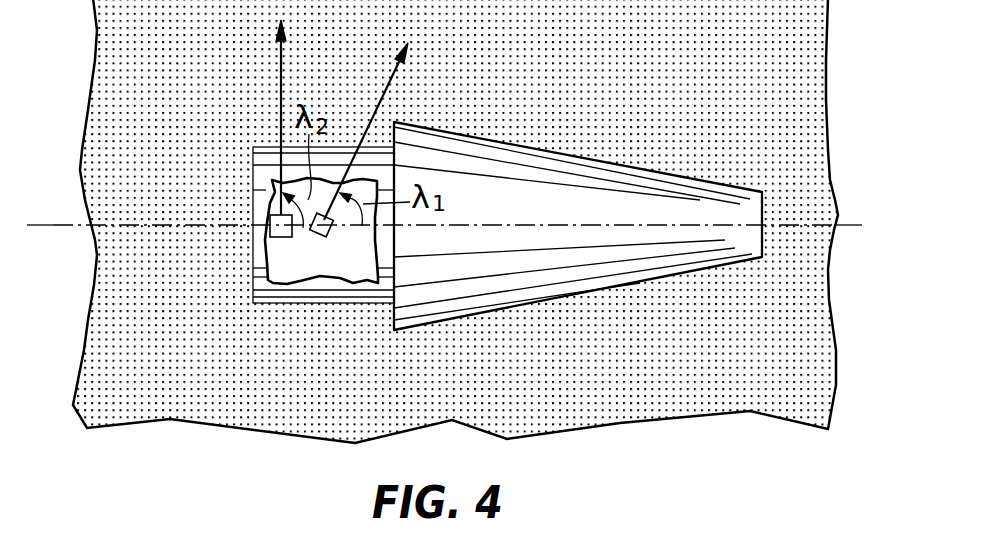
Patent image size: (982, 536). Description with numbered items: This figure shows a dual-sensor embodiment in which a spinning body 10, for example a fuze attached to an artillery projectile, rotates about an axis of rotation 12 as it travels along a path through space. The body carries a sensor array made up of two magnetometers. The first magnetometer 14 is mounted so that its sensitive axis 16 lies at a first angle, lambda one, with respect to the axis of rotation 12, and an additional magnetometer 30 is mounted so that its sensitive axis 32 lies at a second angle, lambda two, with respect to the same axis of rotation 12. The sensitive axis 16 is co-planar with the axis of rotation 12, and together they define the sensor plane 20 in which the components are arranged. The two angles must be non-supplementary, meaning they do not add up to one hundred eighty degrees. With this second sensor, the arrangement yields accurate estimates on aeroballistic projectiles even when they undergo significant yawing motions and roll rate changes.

The spinning body 10 is at (625, 167).
The axis of rotation 12 is at (37, 224).
The magnetometer 14 is at (332, 234).
The sensitive axis 16 is at (390, 78).
The sensor plane 20 is at (830, 70).
The additional magnetometer 30 is at (283, 239).
The sensitive axis 32 is at (280, 100).